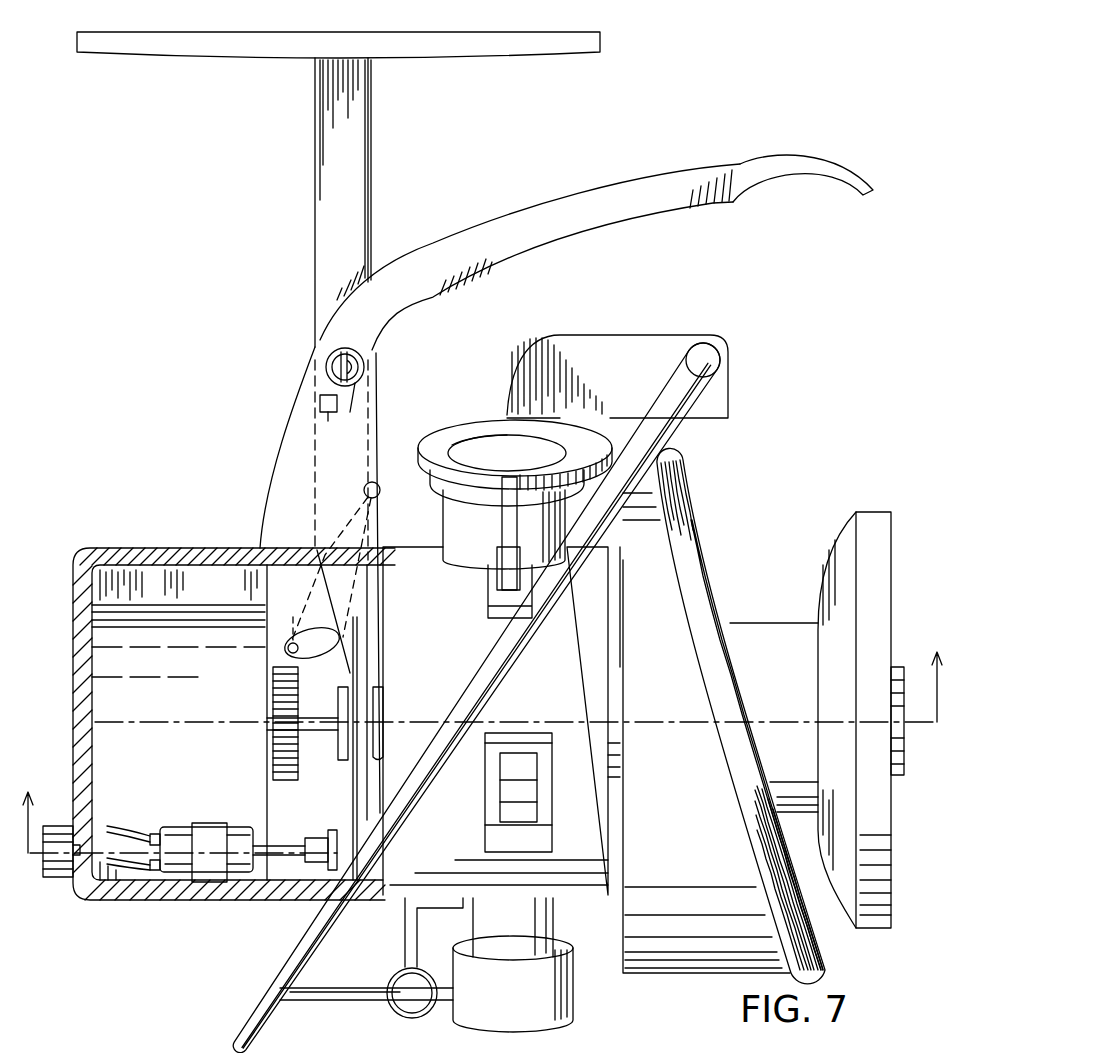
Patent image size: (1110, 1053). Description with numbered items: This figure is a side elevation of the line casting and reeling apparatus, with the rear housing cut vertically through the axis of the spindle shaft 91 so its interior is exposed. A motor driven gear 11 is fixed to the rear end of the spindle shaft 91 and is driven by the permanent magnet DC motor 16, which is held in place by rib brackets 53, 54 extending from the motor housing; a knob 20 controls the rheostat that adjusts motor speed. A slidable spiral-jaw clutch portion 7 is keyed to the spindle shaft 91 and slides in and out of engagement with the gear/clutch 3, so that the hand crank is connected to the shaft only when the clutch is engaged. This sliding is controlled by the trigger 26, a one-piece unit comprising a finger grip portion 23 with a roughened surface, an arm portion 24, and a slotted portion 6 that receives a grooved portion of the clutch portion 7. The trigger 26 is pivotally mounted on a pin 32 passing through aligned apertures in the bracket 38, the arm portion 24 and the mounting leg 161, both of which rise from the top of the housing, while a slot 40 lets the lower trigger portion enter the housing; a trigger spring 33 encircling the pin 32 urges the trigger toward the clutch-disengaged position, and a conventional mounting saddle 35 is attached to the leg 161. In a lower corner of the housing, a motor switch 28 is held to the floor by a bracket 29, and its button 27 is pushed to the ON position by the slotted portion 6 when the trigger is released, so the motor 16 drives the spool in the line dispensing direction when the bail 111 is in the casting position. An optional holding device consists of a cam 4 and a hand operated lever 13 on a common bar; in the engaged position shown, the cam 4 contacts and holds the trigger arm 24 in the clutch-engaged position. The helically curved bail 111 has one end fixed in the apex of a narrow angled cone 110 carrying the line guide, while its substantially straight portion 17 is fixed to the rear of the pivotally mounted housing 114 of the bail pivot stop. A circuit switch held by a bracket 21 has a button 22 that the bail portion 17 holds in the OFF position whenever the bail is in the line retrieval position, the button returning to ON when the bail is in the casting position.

The gear/clutch 3 is at (482, 742).
The cam 4 is at (322, 657).
The slotted portion 6 is at (357, 797).
The slidable spiral-jaw clutch portion 7 is at (383, 697).
The motor driven gear 11 is at (270, 692).
The hand operated lever 13 is at (298, 624).
The permanent magnet DC motor 16 is at (234, 703).
The substantially straight bail portion 17 is at (372, 985).
The knob 20 is at (55, 880).
The bracket 21 is at (410, 1018).
The button 22 is at (398, 1010).
The finger grip portion 23 is at (808, 158).
The arm portion 24 is at (575, 243).
The trigger 26 is at (596, 230).
The button 27 is at (325, 836).
The motor switch 28 is at (170, 826).
The bracket 29 is at (210, 822).
The pin 32 is at (343, 414).
The trigger spring 33 is at (326, 366).
The mounting saddle 35 is at (206, 57).
The bracket 38 is at (295, 583).
The slot 40 is at (308, 556).
The rib bracket 53 is at (135, 590).
The rib bracket 54 is at (126, 880).
The spindle shaft 91 is at (323, 740).
The narrow angled cone 110 is at (688, 440).
The bail 111 is at (518, 652).
The pivotally mounted housing 114 is at (573, 1000).
The mounting leg 161 is at (315, 193).